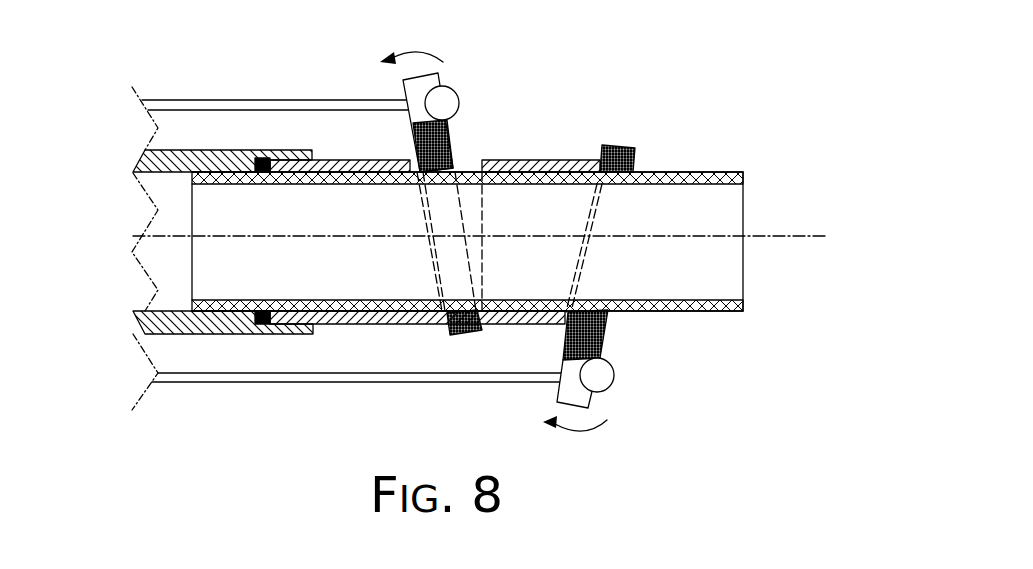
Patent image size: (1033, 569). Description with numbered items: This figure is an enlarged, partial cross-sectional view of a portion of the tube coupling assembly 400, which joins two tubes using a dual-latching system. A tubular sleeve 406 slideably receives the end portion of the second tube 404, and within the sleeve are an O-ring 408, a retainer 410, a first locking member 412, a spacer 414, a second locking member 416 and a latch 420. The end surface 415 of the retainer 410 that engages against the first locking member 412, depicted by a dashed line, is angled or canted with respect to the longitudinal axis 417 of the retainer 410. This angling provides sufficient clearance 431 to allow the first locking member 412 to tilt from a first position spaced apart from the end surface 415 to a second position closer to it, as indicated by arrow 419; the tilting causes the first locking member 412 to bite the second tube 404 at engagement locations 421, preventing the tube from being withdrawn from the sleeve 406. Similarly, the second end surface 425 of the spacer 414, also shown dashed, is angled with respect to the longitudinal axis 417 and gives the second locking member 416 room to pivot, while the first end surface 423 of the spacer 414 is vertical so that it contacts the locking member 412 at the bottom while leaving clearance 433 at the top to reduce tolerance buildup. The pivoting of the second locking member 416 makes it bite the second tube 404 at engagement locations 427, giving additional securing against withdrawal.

The tube coupling assembly 400 is at (593, 58).
The second tube 404 is at (727, 173).
The tubular sleeve 406 is at (167, 333).
The O-ring 408 is at (257, 325).
The retainer 410 is at (333, 327).
The first locking member 412 is at (447, 127).
The spacer 414 is at (253, 157).
The end surface of the retainer 415 is at (427, 247).
The second locking member 416 is at (620, 145).
The longitudinal axis 417 is at (790, 235).
The arrow 419 is at (410, 53).
The latch 420 is at (267, 100).
The engagement locations 421 is at (417, 177).
The first end surface of the spacer 423 is at (465, 232).
The second end surface of the spacer 425 is at (590, 212).
The engagement locations 427 is at (635, 184).
The clearance 431 is at (412, 152).
The clearance 433 is at (468, 149).